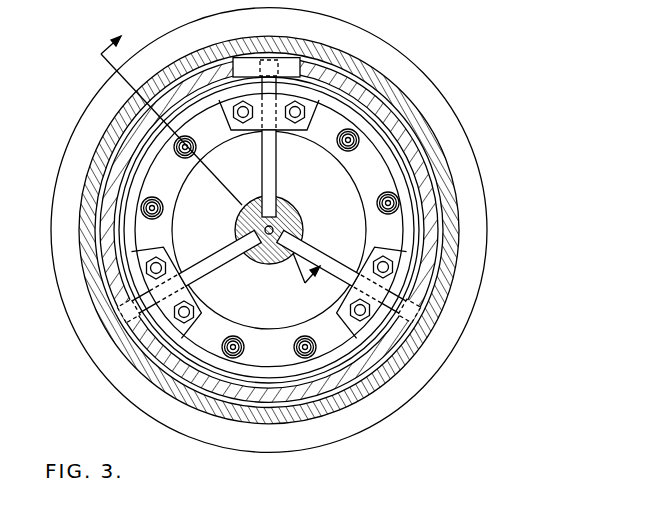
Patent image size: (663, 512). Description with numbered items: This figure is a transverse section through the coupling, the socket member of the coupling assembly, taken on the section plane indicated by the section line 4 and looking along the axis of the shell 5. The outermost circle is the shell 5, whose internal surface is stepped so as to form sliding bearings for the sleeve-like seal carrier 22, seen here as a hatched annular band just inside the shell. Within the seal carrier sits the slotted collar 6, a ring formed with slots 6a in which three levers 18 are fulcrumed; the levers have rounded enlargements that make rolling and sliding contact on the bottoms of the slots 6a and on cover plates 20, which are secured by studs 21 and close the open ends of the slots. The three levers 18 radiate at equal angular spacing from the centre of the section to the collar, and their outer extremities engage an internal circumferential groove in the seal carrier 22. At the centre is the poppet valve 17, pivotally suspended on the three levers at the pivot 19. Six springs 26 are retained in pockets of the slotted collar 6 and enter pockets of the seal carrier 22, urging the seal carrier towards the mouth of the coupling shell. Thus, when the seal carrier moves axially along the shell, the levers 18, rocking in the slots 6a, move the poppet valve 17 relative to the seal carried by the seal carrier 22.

The section line 4- 4 is at (211, 168).
The shell 5 is at (418, 110).
The slotted collar 6 is at (402, 232).
The slots 6a is at (328, 62).
The poppet valve 17 is at (263, 256).
The levers 18 is at (200, 268).
The pivot 19 is at (303, 213).
The cover plates 20 is at (350, 82).
The studs 21 is at (286, 121).
The seal carrier 22 is at (430, 147).
The springs 26 is at (399, 204).